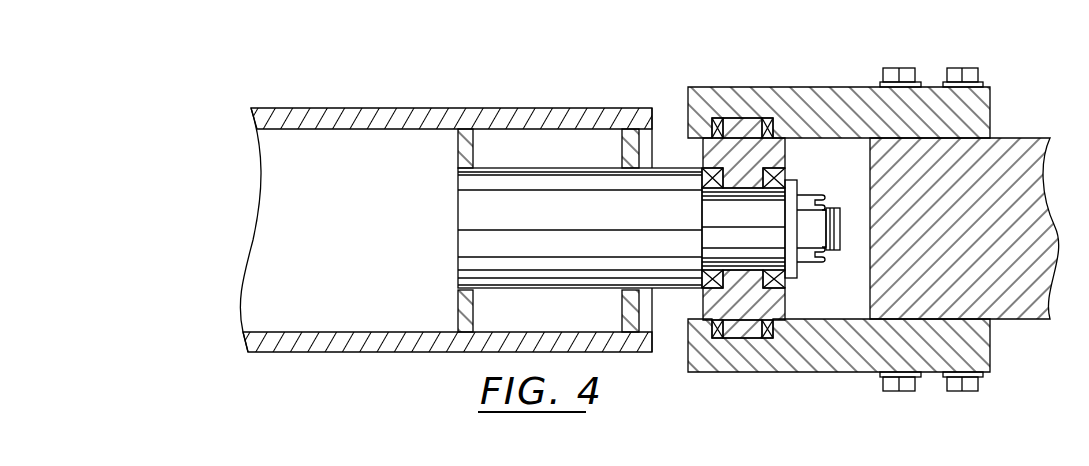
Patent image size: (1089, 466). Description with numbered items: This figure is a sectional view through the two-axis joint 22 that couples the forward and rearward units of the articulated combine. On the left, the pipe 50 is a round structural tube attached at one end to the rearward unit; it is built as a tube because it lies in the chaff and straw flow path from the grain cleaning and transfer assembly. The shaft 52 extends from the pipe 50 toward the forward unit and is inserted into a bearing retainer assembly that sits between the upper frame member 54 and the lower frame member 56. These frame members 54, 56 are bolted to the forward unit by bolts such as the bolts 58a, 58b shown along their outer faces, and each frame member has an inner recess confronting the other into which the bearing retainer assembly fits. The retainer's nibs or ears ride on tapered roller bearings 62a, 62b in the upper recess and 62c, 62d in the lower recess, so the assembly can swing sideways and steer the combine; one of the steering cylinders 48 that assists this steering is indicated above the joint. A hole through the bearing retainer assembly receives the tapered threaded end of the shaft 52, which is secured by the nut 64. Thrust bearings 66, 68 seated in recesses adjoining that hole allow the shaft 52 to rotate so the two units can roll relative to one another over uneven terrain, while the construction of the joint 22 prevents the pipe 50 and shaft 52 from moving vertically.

The joint 22 is at (536, 84).
The steering cylinder 48 is at (822, 12).
The pipe 50 is at (418, 108).
The shaft 52 is at (672, 167).
The upper frame member 54 is at (838, 87).
The lower frame member 56 is at (858, 372).
The bolt 58a is at (905, 68).
The bolt 58b is at (975, 73).
The tapered roller bearing 62a is at (718, 118).
The tapered roller bearing 62b is at (767, 118).
The tapered roller bearing 62c is at (717, 338).
The tapered roller bearing 62d is at (768, 338).
The nut 64 is at (808, 197).
The thrust bearing 66 is at (713, 290).
The thrust bearing 68 is at (784, 285).